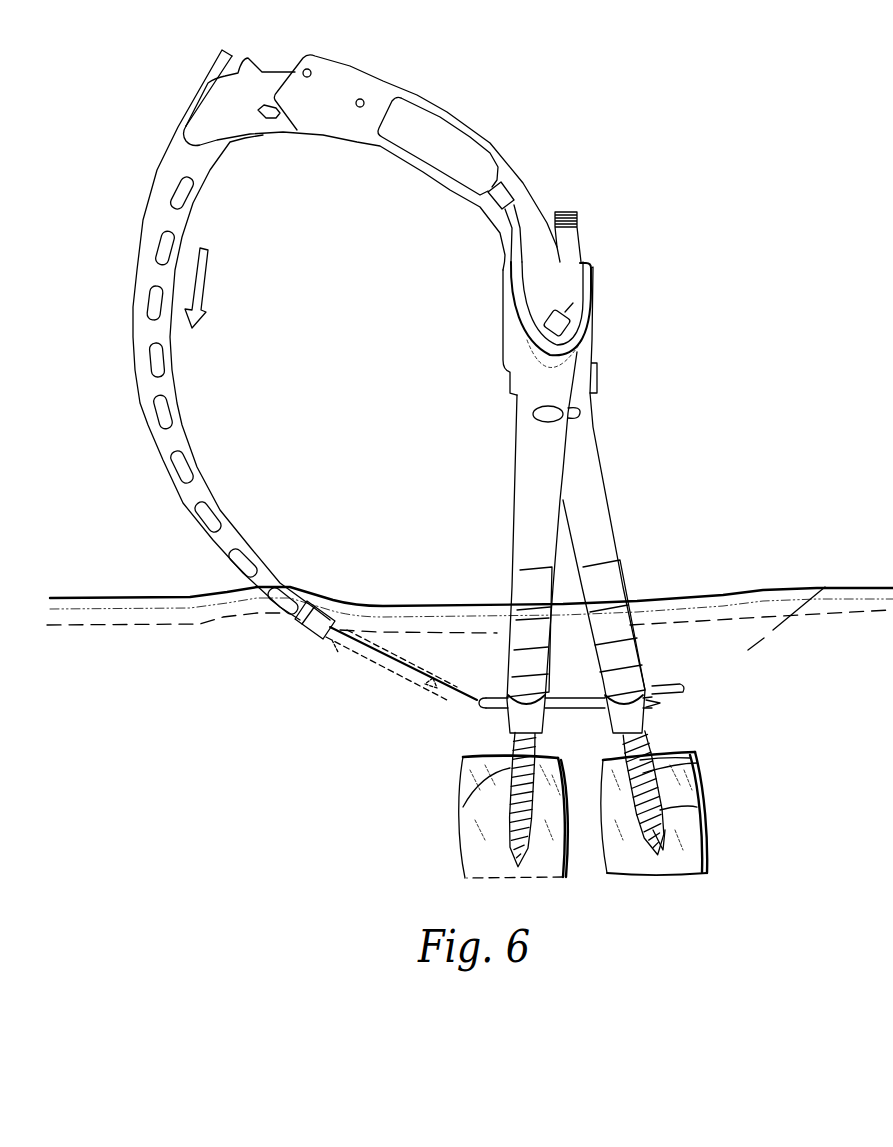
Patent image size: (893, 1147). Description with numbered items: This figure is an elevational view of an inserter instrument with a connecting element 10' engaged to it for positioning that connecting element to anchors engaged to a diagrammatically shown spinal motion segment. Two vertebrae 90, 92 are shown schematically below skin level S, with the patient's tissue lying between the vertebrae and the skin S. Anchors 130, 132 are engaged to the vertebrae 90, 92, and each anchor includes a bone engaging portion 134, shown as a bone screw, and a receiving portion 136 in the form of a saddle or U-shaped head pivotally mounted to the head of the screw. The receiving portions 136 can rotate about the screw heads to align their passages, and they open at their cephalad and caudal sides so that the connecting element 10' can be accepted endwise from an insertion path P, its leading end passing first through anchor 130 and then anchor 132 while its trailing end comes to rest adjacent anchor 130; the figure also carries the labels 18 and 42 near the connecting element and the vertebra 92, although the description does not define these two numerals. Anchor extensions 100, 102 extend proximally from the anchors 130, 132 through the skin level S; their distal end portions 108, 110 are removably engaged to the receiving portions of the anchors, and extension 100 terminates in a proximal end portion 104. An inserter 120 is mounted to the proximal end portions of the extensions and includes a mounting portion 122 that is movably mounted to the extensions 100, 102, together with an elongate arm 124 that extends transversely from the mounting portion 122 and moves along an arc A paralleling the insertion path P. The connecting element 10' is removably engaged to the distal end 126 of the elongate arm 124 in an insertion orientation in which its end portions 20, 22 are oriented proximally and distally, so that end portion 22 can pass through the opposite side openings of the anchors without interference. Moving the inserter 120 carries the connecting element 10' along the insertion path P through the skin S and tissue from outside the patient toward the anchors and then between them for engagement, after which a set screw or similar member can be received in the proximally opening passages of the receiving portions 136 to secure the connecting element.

The connecting element 10' is at (532, 747).
The spinal rod 18 is at (556, 710).
The end portion 20 is at (485, 708).
The end portion 22 is at (661, 688).
The vertebral endplate 42 is at (690, 762).
The vertebra 90 is at (460, 863).
The vertebra 92 is at (689, 811).
The anchor extension 100 is at (505, 542).
The anchor extension 102 is at (637, 563).
The proximal end portion 104 is at (599, 297).
The distal end portion 108 is at (510, 682).
The distal end portion 110 is at (640, 668).
The inserter 120 is at (367, 48).
The mounting portion 122 is at (452, 110).
The elongate arm 124 is at (135, 385).
The distal end 126 is at (322, 612).
The anchor 130 is at (500, 775).
The anchor 132 is at (660, 740).
The bone engaging portion 134 is at (688, 818).
The receiving portion 136 is at (647, 707).
The arc A is at (204, 280).
The skin level S is at (762, 590).
The insertion path P is at (756, 648).